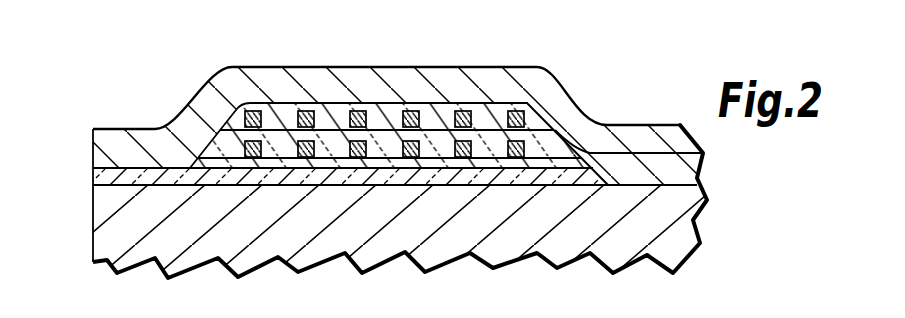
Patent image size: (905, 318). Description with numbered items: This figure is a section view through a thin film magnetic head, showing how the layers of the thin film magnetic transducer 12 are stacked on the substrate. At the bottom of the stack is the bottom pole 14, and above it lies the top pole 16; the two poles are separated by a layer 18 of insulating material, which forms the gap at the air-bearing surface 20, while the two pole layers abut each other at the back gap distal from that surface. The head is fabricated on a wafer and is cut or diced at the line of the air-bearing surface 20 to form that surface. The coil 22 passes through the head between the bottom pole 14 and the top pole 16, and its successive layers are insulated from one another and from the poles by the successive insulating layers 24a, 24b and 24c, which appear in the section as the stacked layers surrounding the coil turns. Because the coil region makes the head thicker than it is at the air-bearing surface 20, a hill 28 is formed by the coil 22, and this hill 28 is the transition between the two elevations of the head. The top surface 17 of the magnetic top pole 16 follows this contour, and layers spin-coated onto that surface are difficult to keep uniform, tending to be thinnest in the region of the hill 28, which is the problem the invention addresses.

The thin film magnetic transducer 12 is at (467, 63).
The bottom pole 14 is at (93, 228).
The top pole 16 is at (92, 138).
The top surface of magnetic layer 17 is at (301, 38).
The layer of insulating material 18 is at (92, 177).
The air-bearing surface 20 is at (92, 198).
The coil 22 is at (362, 148).
The insulating layer 24a is at (697, 153).
The insulating layer 24b is at (563, 137).
The insulating layer 24c is at (540, 110).
The hill 28 is at (213, 75).